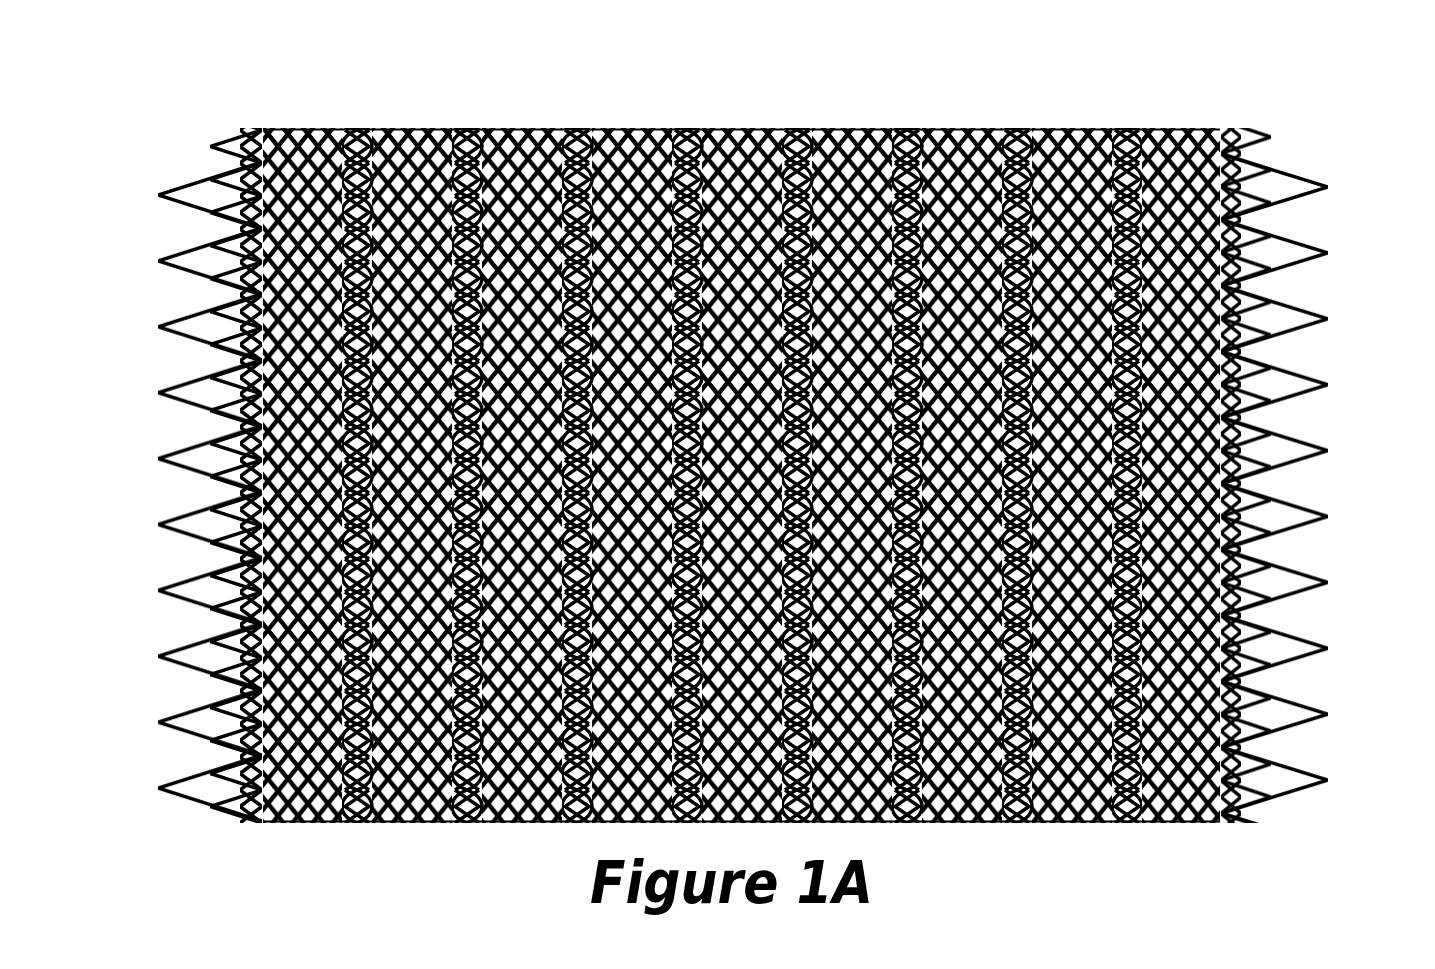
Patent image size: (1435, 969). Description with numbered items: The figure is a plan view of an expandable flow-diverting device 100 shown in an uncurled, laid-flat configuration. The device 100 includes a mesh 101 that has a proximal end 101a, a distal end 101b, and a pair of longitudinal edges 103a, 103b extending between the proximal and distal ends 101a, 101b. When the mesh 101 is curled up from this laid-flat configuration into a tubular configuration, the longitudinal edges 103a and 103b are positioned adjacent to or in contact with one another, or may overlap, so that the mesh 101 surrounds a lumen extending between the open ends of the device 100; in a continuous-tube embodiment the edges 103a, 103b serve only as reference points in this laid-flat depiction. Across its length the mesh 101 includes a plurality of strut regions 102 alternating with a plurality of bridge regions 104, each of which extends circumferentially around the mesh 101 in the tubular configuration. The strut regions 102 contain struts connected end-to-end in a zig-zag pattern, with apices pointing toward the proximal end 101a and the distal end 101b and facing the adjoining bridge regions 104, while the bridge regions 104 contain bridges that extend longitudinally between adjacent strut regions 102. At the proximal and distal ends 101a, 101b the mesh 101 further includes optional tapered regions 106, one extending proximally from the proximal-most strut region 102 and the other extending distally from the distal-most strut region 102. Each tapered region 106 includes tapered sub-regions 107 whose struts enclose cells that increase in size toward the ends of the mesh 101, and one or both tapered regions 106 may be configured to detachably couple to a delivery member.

The expandable device 100 is at (741, 449).
The mesh 101 is at (741, 475).
The proximal end 101a is at (140, 417).
The distal end 101b is at (1342, 380).
The strut regions 102 is at (1229, 116).
The longitudinal edge 103a is at (602, 122).
The longitudinal edge 103b is at (380, 842).
The bridge regions 104 is at (257, 125).
The tapered regions 106 is at (700, 454).
The tapered sub-regions 107 is at (140, 193).